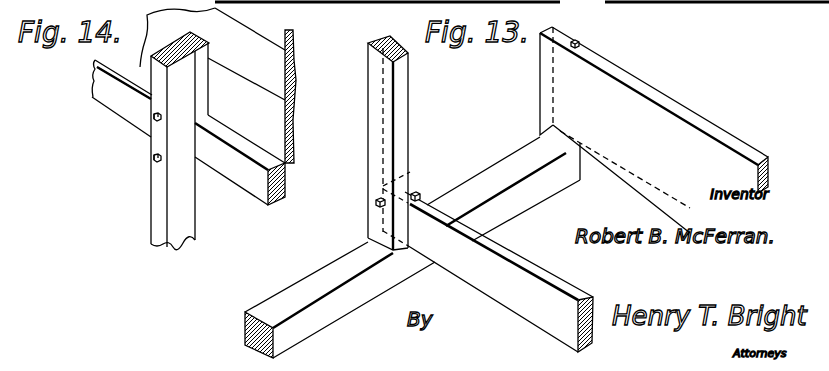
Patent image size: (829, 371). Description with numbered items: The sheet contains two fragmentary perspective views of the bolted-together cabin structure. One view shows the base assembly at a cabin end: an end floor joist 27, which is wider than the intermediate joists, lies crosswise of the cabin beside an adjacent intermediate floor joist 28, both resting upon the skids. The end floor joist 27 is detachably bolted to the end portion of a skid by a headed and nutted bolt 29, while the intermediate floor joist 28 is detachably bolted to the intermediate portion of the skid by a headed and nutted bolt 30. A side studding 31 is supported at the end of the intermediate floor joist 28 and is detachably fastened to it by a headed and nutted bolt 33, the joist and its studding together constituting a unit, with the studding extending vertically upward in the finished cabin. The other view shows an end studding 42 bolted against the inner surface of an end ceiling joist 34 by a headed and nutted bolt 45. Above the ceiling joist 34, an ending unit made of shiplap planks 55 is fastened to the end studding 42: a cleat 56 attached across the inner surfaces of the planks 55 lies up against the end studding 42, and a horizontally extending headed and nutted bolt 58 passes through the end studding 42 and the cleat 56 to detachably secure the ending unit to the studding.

In FIG. 13, the end floor joist 27 is at (703, 125).
In FIG. 13, the intermediate floor joist 28 is at (522, 263).
In FIG. 13, the headed and nutted bolt 29 is at (580, 43).
In FIG. 13, the headed and nutted bolt 30 is at (421, 194).
In FIG. 13, the side studding 31 is at (400, 131).
In FIG. 13, the headed and nutted bolt 33 is at (375, 203).
In FIG. 14, the ceiling joist 34 is at (249, 180).
In FIG. 14, the end studding 42 is at (122, 141).
In FIG. 14, the headed and nutted bolt 45 is at (152, 160).
In FIG. 14, the plank 55 is at (288, 119).
In FIG. 14, the cleat 56 is at (202, 97).
In FIG. 14, the headed and nutted bolt 58 is at (153, 120).